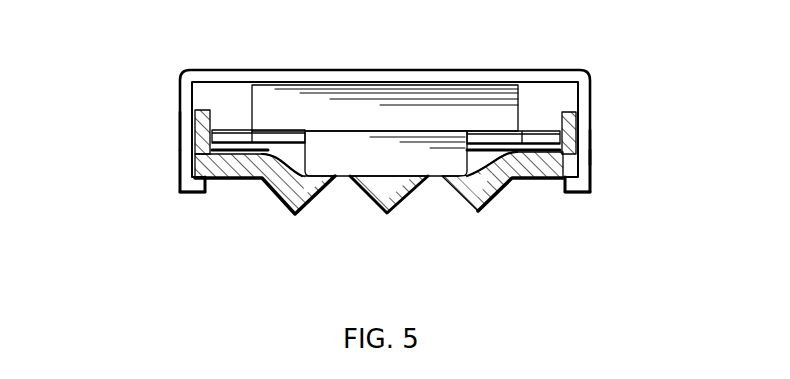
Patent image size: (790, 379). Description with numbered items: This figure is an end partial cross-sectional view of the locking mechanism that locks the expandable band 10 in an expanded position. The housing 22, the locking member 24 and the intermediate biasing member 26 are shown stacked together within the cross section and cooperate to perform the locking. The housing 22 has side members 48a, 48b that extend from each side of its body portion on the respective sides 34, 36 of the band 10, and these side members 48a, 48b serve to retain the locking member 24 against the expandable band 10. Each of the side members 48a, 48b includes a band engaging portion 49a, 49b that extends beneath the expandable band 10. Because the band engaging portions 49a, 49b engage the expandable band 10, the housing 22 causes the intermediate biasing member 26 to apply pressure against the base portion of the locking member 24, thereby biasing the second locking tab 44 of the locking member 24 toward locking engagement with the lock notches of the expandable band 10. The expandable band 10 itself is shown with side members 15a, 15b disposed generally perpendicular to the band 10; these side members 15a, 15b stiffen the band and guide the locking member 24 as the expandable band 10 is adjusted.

The expandable band 10 is at (480, 219).
The housing 22 is at (450, 72).
The locking member 24 is at (553, 131).
The intermediate biasing member 26 is at (300, 103).
The second locking end or tab 44 is at (352, 162).
The side member 15a is at (198, 117).
The side member 15b is at (566, 116).
The side member 48a is at (180, 130).
The side member 48b is at (593, 148).
The band engaging portion 49a is at (183, 194).
The band engaging portion 49b is at (583, 194).
The side of the band 34 is at (158, 170).
The side of the band 36 is at (617, 173).